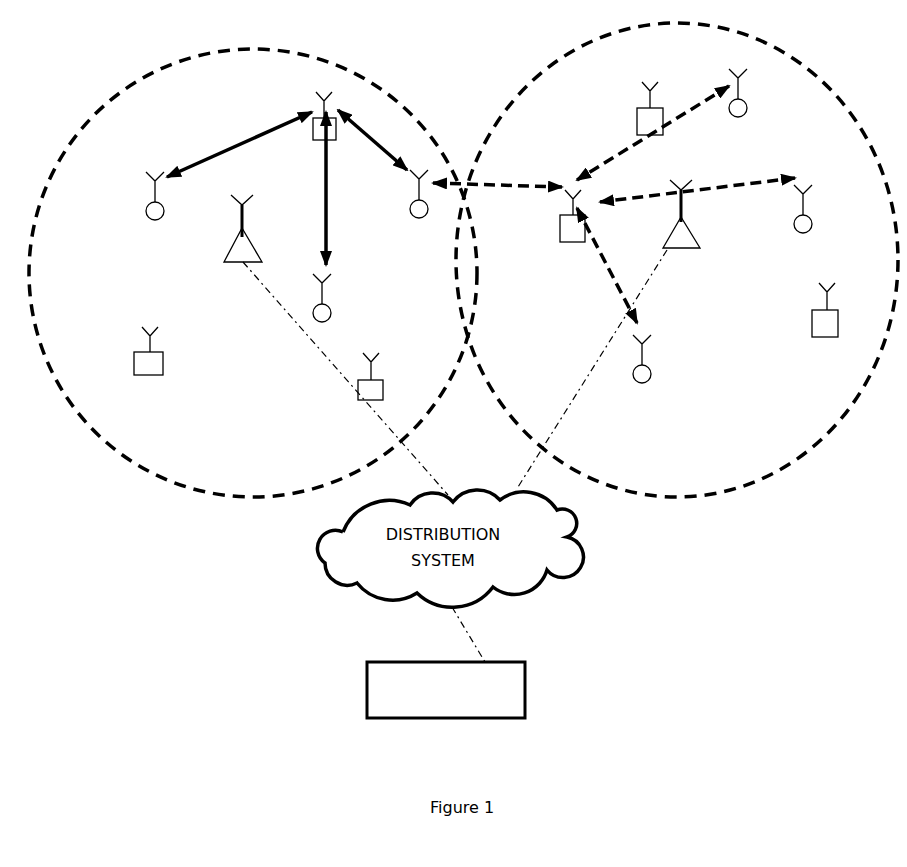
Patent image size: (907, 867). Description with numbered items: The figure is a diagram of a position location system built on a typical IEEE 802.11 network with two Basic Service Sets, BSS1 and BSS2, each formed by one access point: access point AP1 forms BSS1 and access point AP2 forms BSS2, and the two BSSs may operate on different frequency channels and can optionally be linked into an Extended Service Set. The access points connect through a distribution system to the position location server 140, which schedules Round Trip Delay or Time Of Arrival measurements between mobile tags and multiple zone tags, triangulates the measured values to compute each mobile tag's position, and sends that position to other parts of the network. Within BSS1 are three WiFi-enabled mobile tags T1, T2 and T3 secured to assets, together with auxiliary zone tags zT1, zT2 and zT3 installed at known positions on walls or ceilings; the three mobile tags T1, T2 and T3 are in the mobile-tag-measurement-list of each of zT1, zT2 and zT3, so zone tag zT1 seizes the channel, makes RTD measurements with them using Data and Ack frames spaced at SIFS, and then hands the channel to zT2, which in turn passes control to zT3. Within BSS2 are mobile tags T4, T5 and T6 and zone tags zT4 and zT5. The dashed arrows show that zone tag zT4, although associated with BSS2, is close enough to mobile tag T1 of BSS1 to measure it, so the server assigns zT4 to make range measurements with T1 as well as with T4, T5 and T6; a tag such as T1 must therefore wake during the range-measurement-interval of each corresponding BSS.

The first basic service set BSS1 is at (133, 84).
The second basic service set BSS2 is at (805, 66).
The access point AP1 is at (234, 229).
The access point AP2 is at (658, 249).
The mobile tag T1 is at (410, 206).
The mobile tag T2 is at (313, 310).
The mobile tag T3 is at (146, 210).
The mobile tag T4 is at (729, 99).
The mobile tag T5 is at (794, 221).
The mobile tag T6 is at (633, 371).
The zone tag zT1 is at (313, 128).
The zone tag zT2 is at (165, 368).
The zone tag zT3 is at (357, 388).
The zone tag zT4 is at (560, 237).
The zone tag zT5 is at (812, 331).
The position location server 140 is at (367, 672).